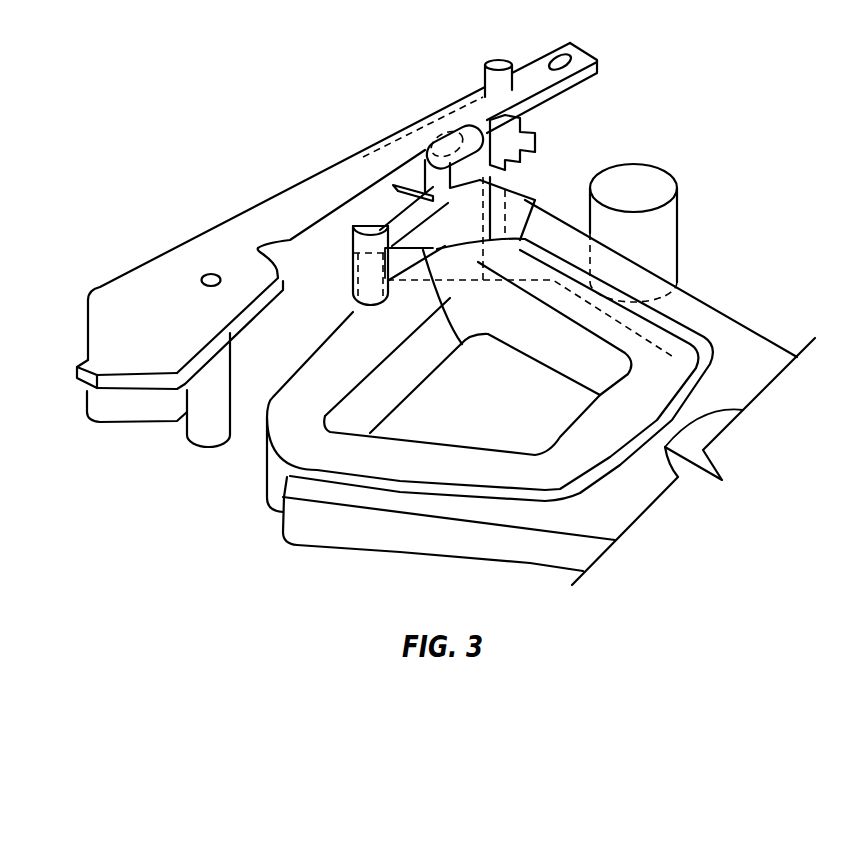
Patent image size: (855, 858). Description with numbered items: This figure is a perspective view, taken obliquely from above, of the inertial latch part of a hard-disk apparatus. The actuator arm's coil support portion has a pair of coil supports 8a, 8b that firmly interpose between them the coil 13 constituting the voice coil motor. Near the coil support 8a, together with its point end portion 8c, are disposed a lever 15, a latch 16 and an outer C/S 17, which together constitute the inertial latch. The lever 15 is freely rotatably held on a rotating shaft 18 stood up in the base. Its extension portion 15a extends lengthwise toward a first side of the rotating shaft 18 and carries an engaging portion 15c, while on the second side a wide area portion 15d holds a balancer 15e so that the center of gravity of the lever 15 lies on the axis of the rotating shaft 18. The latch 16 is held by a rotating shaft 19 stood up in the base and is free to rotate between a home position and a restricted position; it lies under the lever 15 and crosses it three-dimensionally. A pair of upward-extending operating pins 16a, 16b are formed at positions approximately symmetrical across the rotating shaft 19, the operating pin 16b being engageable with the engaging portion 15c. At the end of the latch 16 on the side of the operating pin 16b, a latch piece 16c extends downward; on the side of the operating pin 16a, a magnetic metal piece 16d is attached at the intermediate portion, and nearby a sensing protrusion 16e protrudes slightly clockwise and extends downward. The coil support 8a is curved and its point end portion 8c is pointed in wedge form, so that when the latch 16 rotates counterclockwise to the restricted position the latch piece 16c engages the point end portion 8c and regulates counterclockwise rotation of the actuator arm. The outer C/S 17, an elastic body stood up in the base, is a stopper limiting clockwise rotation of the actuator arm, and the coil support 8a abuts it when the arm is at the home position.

The coil support 8a is at (640, 280).
The coil support 8b is at (412, 504).
The point end portion 8c is at (462, 344).
The coil 13 is at (560, 472).
The lever 15 is at (326, 235).
The extension portion 15a is at (350, 167).
The engaging portion 15c is at (407, 123).
The wide area portion 15d is at (520, 70).
The balancer 15e is at (157, 408).
The latch 16 is at (449, 185).
The operating pin 16a is at (497, 63).
The operating pin 16b is at (383, 193).
The latch piece 16c is at (353, 297).
The magnetic metal piece 16d is at (530, 127).
The sensing protrusion 16e is at (510, 197).
The outer C/S 17 is at (643, 187).
The rotating shaft 18 is at (210, 275).
The rotating shaft 19 is at (467, 133).